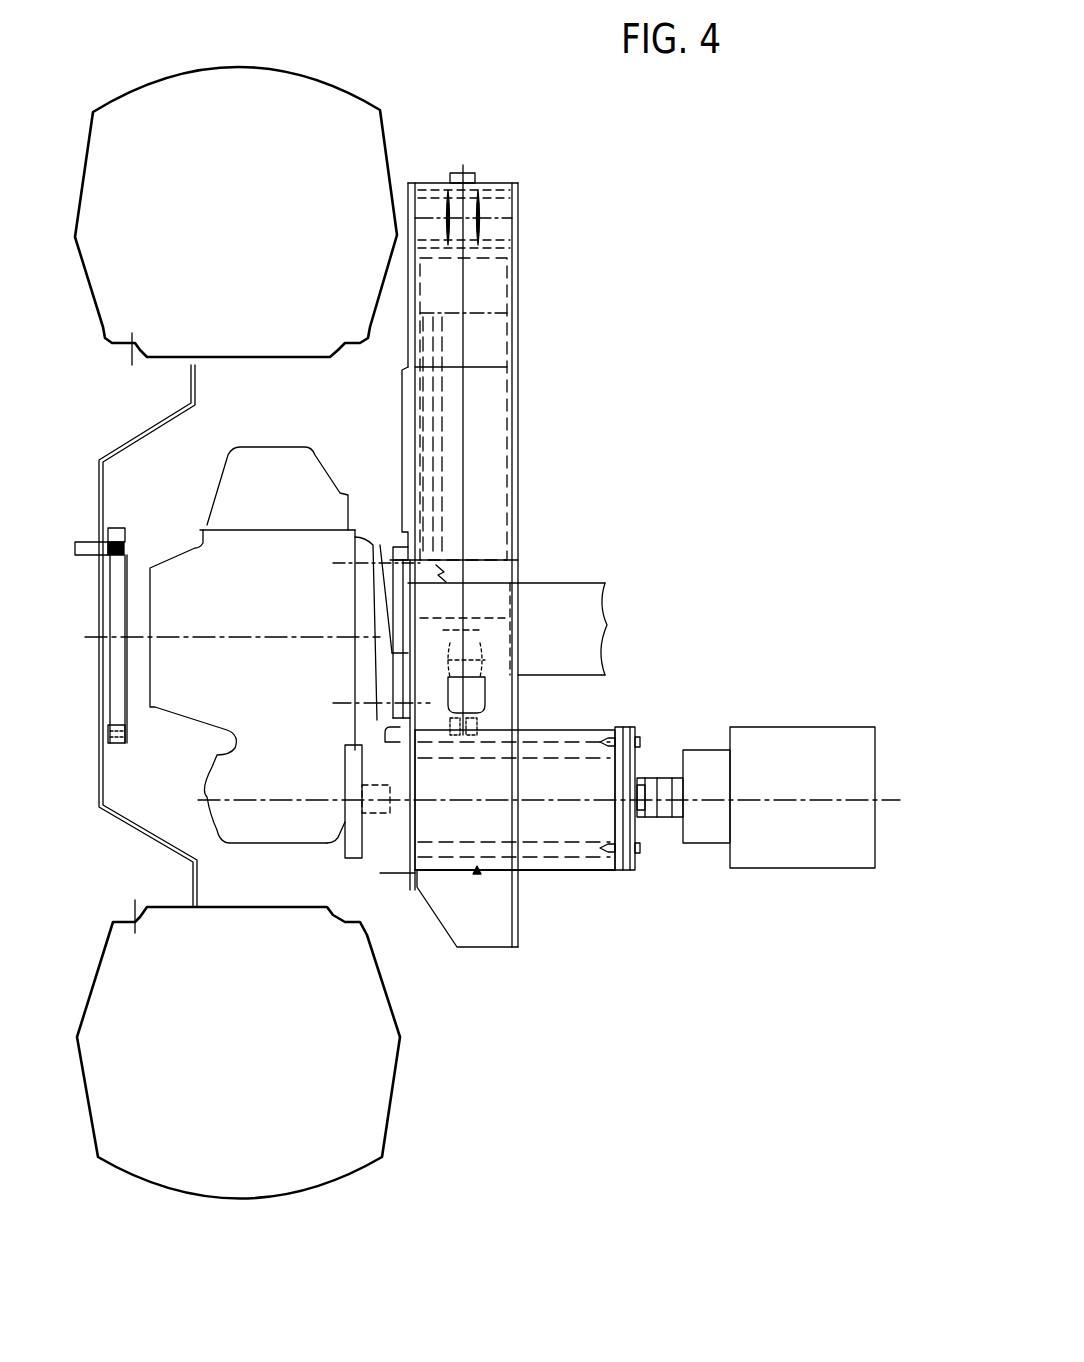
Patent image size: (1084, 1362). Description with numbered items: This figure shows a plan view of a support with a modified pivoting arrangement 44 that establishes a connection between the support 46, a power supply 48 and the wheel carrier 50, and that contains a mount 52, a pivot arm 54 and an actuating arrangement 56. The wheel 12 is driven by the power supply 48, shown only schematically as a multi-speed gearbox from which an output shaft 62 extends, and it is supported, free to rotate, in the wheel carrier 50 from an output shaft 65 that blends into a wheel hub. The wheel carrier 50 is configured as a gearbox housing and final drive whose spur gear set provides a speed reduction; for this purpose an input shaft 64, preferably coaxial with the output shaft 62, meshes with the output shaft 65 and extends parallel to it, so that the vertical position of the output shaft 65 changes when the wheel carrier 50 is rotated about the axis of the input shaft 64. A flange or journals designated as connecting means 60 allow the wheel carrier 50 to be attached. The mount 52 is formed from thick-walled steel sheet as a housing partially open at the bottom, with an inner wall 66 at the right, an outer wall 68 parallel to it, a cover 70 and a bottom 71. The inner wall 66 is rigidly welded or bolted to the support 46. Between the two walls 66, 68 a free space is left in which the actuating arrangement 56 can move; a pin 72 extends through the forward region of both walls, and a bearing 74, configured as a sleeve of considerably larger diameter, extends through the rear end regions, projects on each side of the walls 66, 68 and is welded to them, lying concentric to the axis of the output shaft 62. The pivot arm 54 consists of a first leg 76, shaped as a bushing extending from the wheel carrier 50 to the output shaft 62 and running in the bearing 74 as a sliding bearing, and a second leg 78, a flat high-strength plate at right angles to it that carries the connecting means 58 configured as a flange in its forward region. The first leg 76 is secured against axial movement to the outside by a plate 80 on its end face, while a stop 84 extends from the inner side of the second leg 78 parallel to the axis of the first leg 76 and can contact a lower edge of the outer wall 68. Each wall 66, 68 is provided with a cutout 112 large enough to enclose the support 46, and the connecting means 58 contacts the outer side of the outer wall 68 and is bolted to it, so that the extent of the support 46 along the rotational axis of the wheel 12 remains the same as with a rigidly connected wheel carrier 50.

The wheel 12 is at (224, 175).
The pivoting arrangement 44 is at (478, 973).
The support 46 is at (580, 583).
The power supply 48 is at (783, 735).
The wheel carrier 50 is at (233, 487).
The mount 52 is at (513, 330).
The pivot arm 54 is at (353, 860).
The actuating arrangement 56 is at (468, 172).
The connecting means 58 is at (380, 545).
The mating flange 60 is at (362, 530).
The output shaft 62 is at (660, 820).
The input shaft 64 is at (340, 780).
The output shaft 65 is at (100, 697).
The inner wall 66 is at (513, 420).
The outer wall 68 is at (408, 217).
The cover 70 is at (480, 400).
The bottom 71 is at (492, 930).
The pin 72 is at (500, 212).
The bearing 74 is at (572, 873).
The first leg 76 is at (347, 840).
The second leg 78 is at (367, 607).
The plate 80 is at (620, 873).
The stop 84 is at (360, 703).
The cutout 112 is at (522, 580).